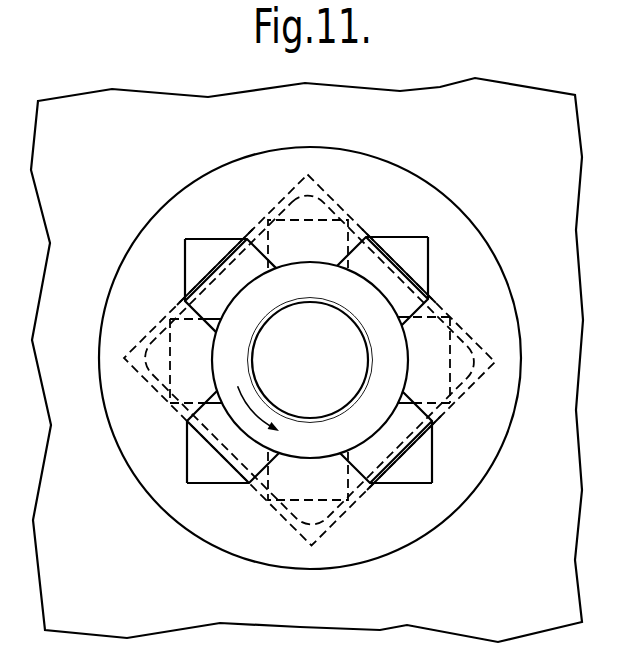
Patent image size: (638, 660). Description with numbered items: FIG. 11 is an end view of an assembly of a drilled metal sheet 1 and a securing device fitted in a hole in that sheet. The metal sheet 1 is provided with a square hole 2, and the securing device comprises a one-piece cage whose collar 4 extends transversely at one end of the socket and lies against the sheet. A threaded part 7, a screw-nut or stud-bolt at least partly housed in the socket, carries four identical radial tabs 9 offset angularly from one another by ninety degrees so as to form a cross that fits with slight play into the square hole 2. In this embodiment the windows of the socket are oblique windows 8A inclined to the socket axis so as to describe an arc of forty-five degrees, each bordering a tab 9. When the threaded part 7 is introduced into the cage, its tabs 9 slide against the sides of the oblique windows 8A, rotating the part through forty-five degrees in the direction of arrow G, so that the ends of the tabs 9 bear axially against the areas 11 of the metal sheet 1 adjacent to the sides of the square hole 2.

The metal sheet 1 is at (532, 108).
The collar 4 is at (461, 231).
The bearing areas of the metal sheet 11 is at (412, 240).
The oblique windows 8A is at (411, 305).
The square hole 2 is at (384, 267).
The radial tabs 9 is at (426, 369).
The threaded part 7 is at (352, 423).
The direction of rotation arrow G is at (250, 403).